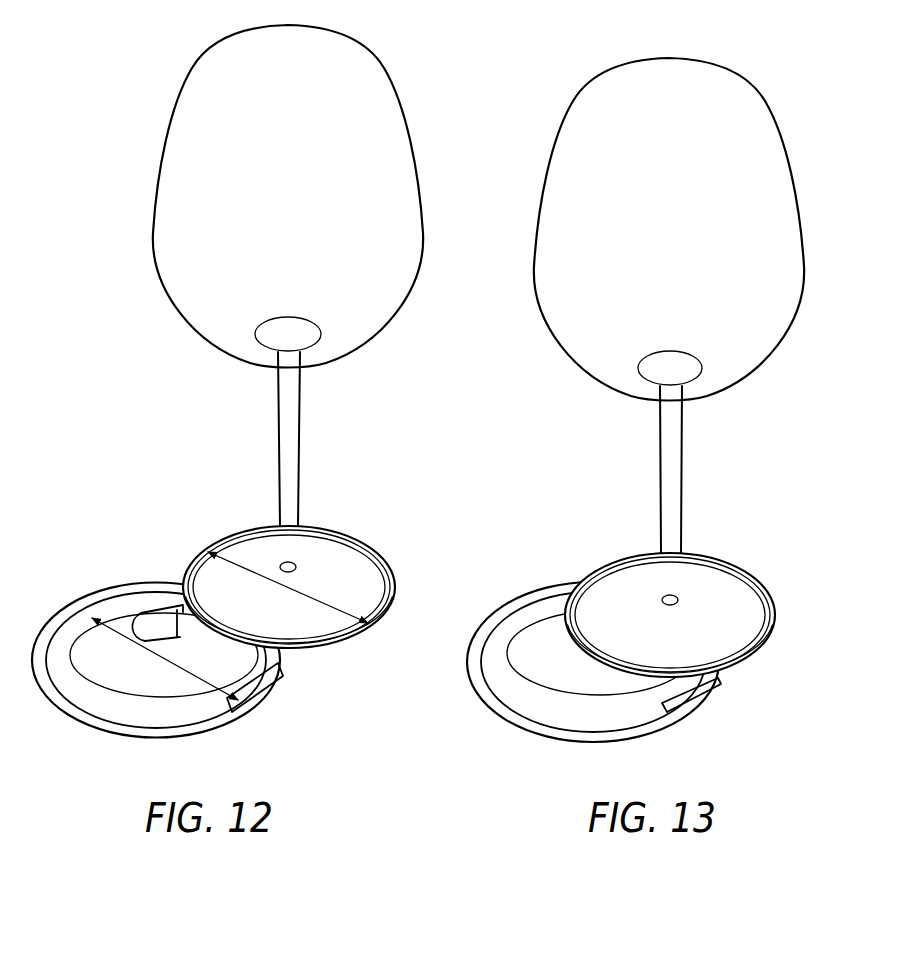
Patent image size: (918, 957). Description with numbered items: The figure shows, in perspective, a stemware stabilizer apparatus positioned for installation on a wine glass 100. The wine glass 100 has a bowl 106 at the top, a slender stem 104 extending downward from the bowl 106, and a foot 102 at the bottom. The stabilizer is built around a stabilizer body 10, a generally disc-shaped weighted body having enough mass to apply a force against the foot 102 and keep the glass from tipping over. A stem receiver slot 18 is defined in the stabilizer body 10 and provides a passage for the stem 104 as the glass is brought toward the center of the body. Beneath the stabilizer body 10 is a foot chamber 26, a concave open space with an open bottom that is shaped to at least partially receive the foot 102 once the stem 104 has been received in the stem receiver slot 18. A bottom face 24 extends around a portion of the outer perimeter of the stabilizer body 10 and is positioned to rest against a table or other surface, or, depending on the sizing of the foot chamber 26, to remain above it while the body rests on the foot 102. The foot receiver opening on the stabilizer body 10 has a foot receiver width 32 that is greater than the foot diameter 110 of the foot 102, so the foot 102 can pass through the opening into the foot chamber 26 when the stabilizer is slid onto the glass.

In FIG. 12, the stabilizer body 10 is at (154, 653).
In FIG. 13, the stabilizer body 10 is at (589, 661).
In FIG. 12, the stem receiver slot 18 is at (178, 610).
In FIG. 12, the bottom face 24 is at (52, 687).
In FIG. 13, the bottom face 24 is at (482, 685).
In FIG. 12, the foot chamber 26 is at (112, 693).
In FIG. 13, the foot chamber 26 is at (547, 693).
In FIG. 12, the foot receiver width 32 is at (143, 646).
In FIG. 12, the wine glass 100 is at (267, 352).
In FIG. 13, the wine glass 100 is at (685, 356).
In FIG. 12, the foot 102 is at (348, 538).
In FIG. 13, the foot 102 is at (758, 581).
In FIG. 12, the stem 104 is at (302, 432).
In FIG. 13, the stem 104 is at (683, 466).
In FIG. 12, the bowl 106 is at (152, 196).
In FIG. 13, the bowl 106 is at (563, 347).
In FIG. 12, the foot diameter 110 is at (330, 607).